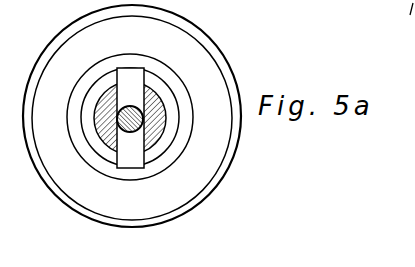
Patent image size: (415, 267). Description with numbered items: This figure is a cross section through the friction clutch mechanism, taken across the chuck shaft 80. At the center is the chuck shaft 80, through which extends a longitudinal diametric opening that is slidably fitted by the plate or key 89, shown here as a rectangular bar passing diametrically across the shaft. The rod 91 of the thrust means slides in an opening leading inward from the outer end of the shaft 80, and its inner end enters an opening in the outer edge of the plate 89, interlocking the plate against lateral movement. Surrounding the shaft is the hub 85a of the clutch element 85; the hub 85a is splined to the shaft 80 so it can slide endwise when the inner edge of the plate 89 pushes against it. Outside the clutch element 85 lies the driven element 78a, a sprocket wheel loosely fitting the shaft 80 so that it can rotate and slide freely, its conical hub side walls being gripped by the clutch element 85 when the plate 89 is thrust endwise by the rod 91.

The driven element 78a is at (238, 95).
The clutch element 85 is at (203, 63).
The hub 85a is at (162, 151).
The chuck shaft 80 is at (167, 108).
The plate or key 89 is at (137, 75).
The rod 91 is at (131, 106).